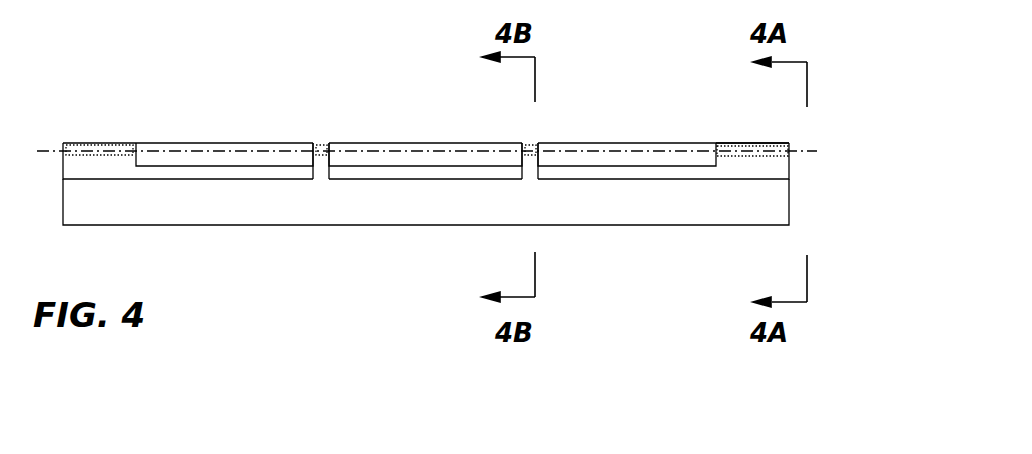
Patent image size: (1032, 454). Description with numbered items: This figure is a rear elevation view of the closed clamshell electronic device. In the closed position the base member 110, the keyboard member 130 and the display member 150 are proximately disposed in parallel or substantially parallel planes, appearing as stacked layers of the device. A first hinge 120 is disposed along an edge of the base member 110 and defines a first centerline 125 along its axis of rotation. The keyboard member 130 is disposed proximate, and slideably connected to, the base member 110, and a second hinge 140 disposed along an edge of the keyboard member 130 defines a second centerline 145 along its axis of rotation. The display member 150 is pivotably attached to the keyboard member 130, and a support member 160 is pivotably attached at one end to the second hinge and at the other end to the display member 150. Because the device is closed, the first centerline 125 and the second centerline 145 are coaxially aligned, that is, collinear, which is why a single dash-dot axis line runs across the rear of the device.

The base member 110 is at (789, 202).
The first hinge 120 is at (530, 143).
The first centerline 125 is at (343, 150).
The keyboard member 130 is at (789, 165).
The second hinge 140 is at (743, 142).
The second centerline 145 is at (797, 151).
The display member 150 is at (567, 143).
The support member 160 is at (482, 143).